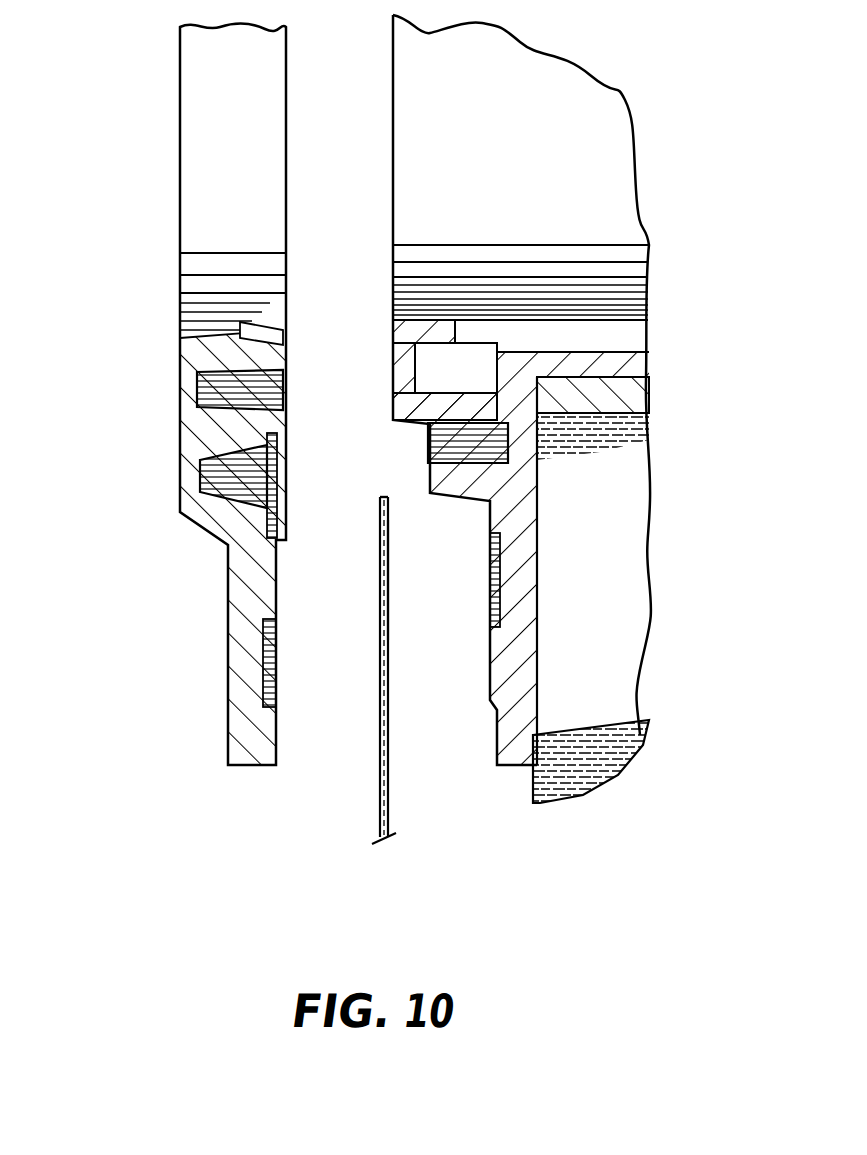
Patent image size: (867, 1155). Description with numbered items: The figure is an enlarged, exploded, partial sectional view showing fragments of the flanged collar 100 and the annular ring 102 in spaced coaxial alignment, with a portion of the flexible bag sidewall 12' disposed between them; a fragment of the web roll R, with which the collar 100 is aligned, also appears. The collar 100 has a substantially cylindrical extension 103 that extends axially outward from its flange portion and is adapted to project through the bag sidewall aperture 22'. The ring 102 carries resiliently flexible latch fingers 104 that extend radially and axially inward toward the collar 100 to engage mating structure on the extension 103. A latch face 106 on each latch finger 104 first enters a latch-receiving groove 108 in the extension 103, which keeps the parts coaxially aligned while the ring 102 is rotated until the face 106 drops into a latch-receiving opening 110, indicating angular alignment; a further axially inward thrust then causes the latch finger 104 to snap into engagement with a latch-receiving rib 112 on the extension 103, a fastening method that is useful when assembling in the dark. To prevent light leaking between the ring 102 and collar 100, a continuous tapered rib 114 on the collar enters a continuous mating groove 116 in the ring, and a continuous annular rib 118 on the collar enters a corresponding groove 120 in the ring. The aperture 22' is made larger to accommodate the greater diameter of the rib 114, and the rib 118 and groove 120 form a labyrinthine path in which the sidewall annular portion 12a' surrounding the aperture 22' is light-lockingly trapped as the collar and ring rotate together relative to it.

The flanged collar 100 is at (537, 471).
The annular ring 102 is at (193, 394).
The cylindrical extension 103 is at (393, 405).
The latch finger 104 is at (248, 332).
The latch face 106 is at (286, 340).
The latch-receiving groove 108 is at (393, 358).
The latch-receiving opening 110 is at (452, 393).
The latch-receiving rib 112 is at (470, 318).
The tapered rib 114 is at (428, 477).
The mating groove 116 is at (270, 475).
The annular rib 118 is at (490, 672).
The corresponding groove 120 is at (276, 676).
The bag sidewall 12' is at (356, 675).
The sidewall annular portion 12a' is at (432, 587).
The bag sidewall aperture 22' is at (346, 514).
The web roll R is at (597, 795).